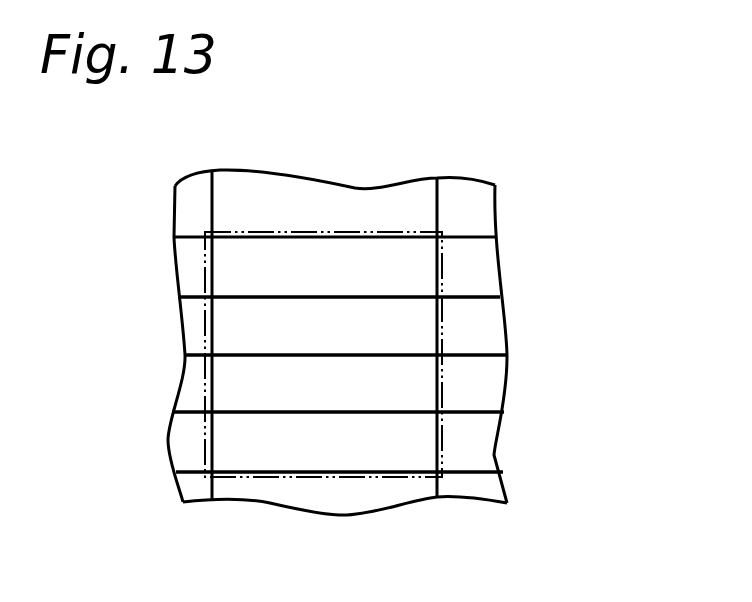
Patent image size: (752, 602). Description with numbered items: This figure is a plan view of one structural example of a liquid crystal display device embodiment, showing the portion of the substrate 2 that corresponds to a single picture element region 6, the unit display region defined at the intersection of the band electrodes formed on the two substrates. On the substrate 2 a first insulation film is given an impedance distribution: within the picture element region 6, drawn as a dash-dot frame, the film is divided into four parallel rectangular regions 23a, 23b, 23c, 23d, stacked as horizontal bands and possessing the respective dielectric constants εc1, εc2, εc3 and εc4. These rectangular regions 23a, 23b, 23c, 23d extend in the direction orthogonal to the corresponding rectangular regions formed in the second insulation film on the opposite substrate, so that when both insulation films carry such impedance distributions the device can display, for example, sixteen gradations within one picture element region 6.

The substrate 2 is at (356, 200).
The picture element region 6 is at (316, 478).
The rectangular region 23a is at (422, 267).
The rectangular region 23b is at (418, 325).
The rectangular region 23c is at (417, 383).
The rectangular region 23d is at (418, 438).